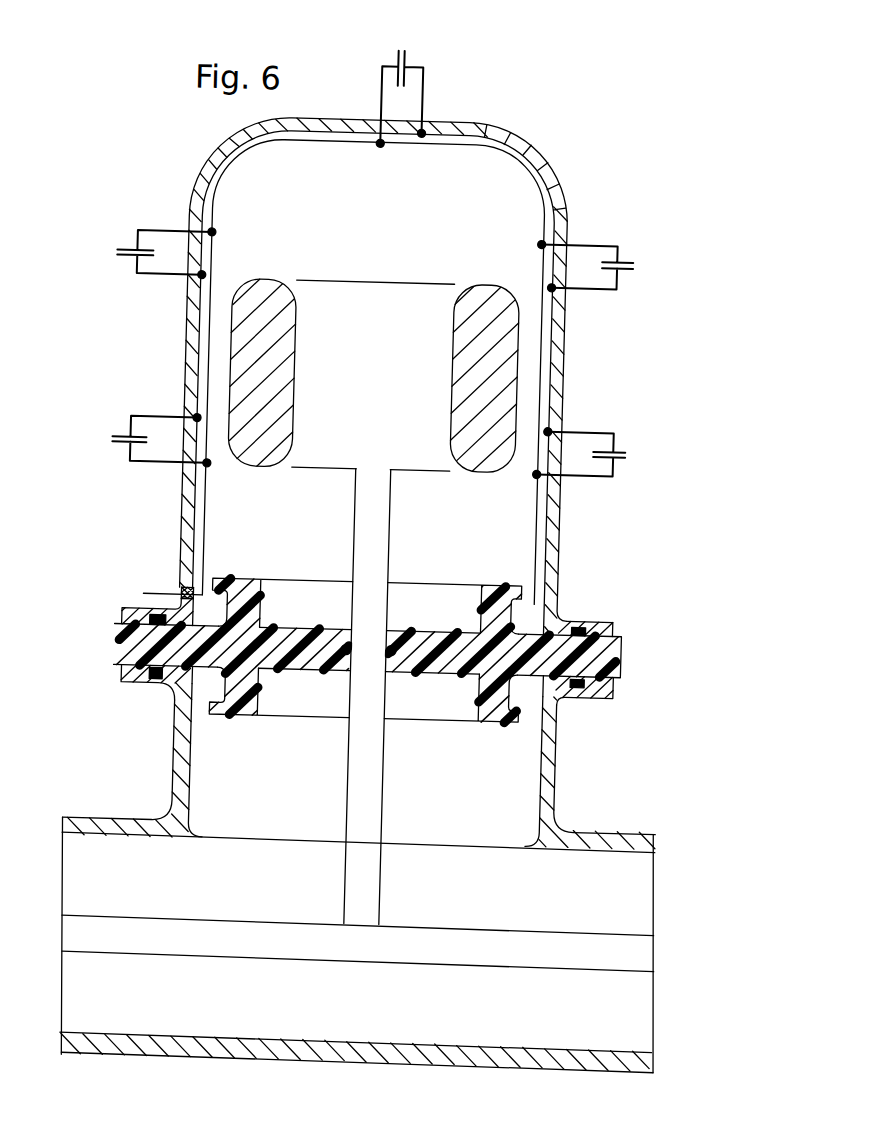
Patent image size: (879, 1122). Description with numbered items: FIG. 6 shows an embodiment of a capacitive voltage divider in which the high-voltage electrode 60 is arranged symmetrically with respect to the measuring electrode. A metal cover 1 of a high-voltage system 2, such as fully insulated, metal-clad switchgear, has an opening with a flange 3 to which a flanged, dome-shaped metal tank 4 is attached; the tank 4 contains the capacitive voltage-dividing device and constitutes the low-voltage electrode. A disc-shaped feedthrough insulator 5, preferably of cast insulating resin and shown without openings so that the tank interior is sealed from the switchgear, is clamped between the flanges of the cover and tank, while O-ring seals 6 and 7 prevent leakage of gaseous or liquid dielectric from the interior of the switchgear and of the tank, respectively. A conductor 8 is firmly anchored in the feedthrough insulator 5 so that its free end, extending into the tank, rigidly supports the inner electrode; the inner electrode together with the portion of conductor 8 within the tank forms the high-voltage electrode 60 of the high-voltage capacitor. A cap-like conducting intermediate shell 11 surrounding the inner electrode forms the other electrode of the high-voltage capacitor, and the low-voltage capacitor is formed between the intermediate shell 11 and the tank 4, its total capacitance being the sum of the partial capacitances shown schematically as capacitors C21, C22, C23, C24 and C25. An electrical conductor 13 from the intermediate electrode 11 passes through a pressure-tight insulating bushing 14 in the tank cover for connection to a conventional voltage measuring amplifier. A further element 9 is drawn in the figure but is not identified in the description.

The metal cover 1 is at (113, 829).
The high-voltage system 2 is at (89, 1000).
The flange 3 is at (163, 683).
The dome-shaped metal tank 4 is at (184, 520).
The feedthrough insulator 5 is at (127, 653).
The O-ring seal 6 is at (144, 686).
The O-ring seal 7 is at (142, 613).
The conductor 8 is at (376, 765).
The bottom plate 9 is at (440, 938).
The intermediate shell 11 is at (510, 176).
The electrical conductor 13 is at (144, 597).
The insulating bushing 14 is at (178, 593).
The high-voltage electrode 60 is at (473, 280).
The capacitor C21 is at (149, 252).
The capacitor C22 is at (424, 94).
The capacitor C23 is at (601, 267).
The capacitor C24 is at (147, 437).
The capacitor C25 is at (598, 453).